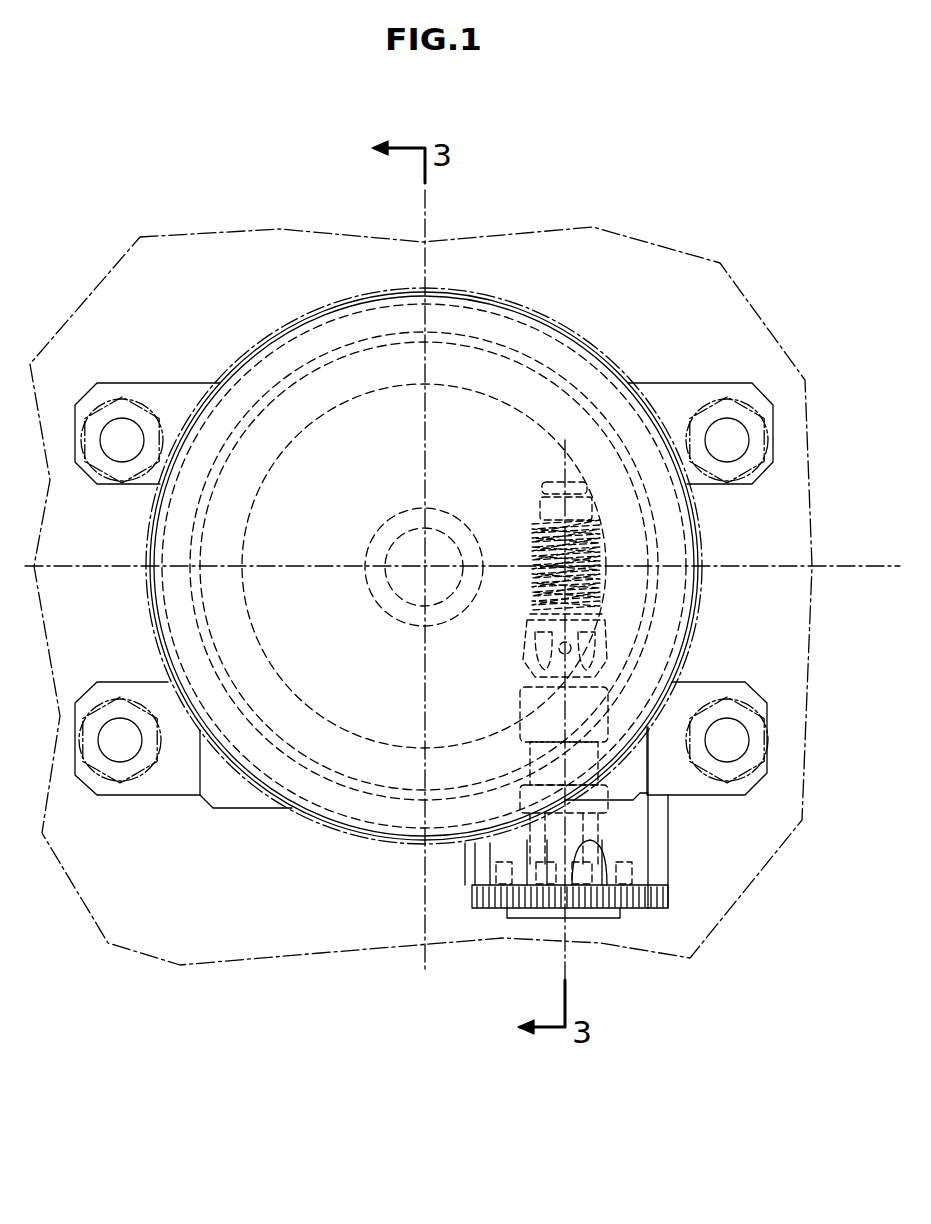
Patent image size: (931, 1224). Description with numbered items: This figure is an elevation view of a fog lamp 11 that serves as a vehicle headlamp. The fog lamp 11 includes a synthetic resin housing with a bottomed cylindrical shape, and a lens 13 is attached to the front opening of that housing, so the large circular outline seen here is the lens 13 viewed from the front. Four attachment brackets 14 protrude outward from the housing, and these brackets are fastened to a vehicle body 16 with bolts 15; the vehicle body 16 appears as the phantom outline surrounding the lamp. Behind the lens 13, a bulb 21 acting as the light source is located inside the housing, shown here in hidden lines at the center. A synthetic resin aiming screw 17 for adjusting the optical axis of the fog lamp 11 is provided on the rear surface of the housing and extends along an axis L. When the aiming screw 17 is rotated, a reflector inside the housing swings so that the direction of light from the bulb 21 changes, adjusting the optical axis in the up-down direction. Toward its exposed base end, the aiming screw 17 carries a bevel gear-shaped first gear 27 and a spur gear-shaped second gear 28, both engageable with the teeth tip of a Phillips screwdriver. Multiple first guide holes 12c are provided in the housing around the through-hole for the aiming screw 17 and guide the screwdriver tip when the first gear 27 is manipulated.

The fog lamp 11 is at (589, 308).
The first guide holes 12c is at (520, 858).
The lens 13 is at (380, 410).
The attachment brackets 14 is at (165, 395).
The bolts 15 is at (106, 412).
The vehicle body 16 is at (245, 255).
The aiming screw 17 is at (530, 548).
The bulb 21 is at (408, 535).
The first gear 27 is at (588, 878).
The second gear 28 is at (495, 908).
The axis L is at (565, 470).